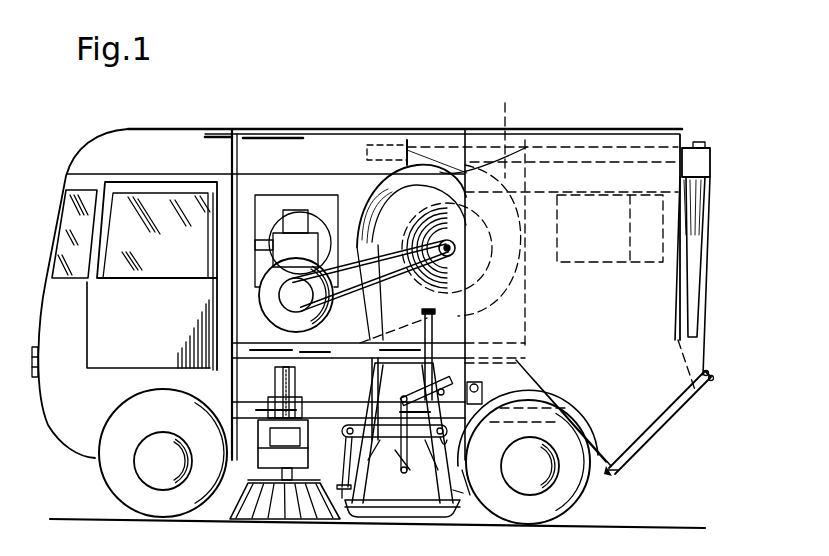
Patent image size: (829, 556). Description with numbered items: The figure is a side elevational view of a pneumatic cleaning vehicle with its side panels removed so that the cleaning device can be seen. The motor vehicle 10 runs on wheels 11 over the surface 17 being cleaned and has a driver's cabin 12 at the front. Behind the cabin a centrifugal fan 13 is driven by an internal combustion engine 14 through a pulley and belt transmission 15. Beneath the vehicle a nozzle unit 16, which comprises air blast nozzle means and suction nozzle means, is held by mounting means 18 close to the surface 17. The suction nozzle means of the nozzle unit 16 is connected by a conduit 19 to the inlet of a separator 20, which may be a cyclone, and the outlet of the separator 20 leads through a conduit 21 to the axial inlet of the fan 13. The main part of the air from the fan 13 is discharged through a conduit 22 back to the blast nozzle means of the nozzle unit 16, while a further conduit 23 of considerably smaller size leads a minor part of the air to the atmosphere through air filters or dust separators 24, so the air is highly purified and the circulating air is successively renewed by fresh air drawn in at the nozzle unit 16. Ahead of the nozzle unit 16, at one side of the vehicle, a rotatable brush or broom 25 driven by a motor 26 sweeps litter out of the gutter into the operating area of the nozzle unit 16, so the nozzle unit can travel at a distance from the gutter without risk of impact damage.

The motor vehicle 10 is at (294, 129).
The wheels 11 is at (133, 498).
The driver's cabin 12 is at (118, 238).
The fan 13 is at (375, 203).
The internal combustion engine 14 is at (292, 212).
The pulley and belt transmission 15 is at (352, 302).
The nozzle unit 16 is at (374, 520).
The surface 17 is at (632, 522).
The mounting means 18 is at (449, 381).
The conduit 19 is at (430, 313).
The separator 20 is at (670, 397).
The conduit 21 is at (507, 126).
The conduit 22 is at (375, 373).
The conduit 23 is at (380, 146).
The air filters or dust separators 24 is at (700, 248).
The rotatable brush or broom 25 is at (255, 520).
The motor 26 is at (262, 458).